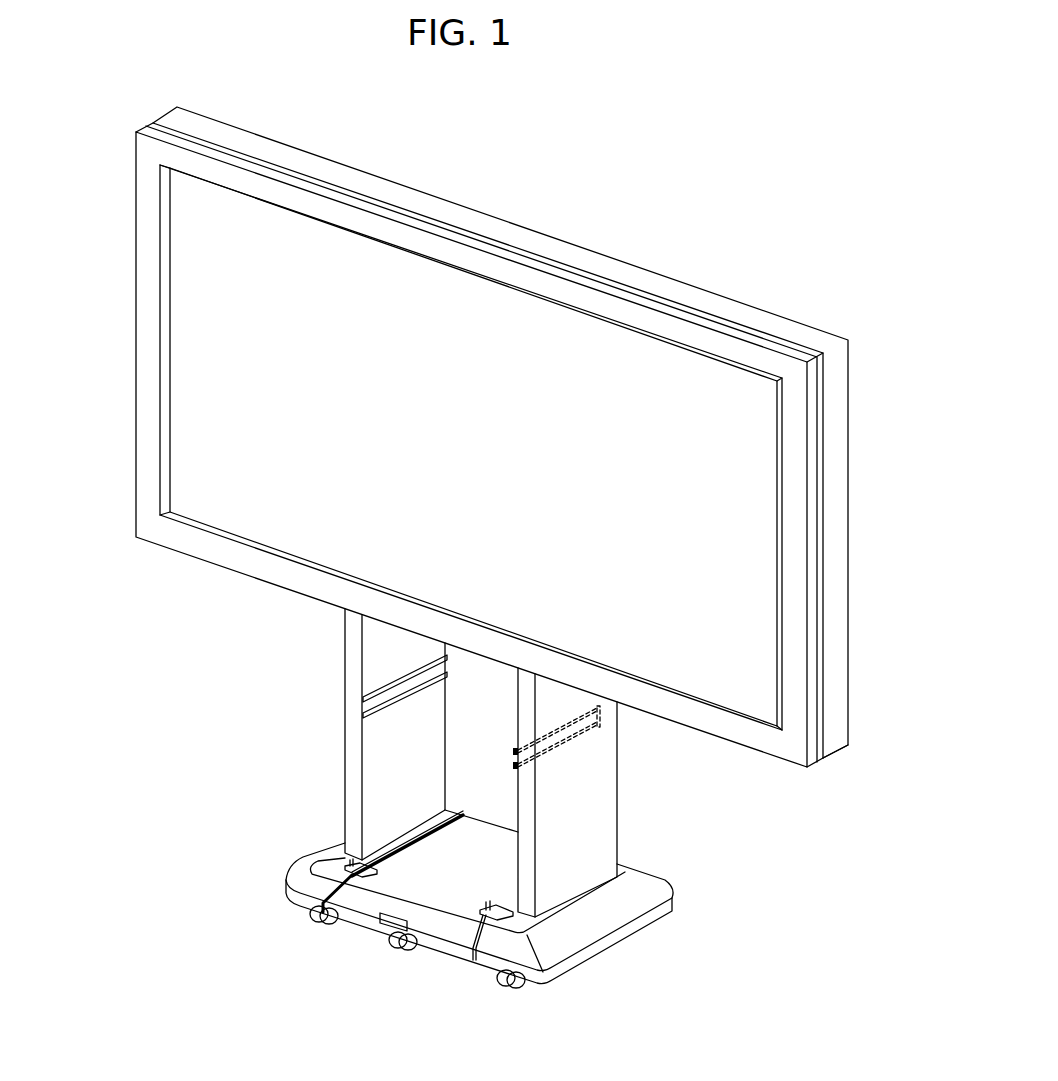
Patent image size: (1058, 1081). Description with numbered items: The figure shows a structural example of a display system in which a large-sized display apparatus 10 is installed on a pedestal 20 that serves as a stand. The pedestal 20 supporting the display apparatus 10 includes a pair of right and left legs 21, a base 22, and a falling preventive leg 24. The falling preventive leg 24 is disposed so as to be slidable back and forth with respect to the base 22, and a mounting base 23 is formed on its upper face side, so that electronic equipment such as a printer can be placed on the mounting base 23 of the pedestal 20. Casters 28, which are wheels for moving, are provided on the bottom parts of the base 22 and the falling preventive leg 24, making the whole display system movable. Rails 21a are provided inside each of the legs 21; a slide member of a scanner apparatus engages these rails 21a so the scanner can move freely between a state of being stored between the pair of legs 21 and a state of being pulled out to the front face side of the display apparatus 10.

The display apparatus 10 is at (130, 411).
The pedestal 20 is at (448, 818).
The legs 21 is at (350, 766).
The rails 21a is at (514, 749).
The base 22 is at (296, 893).
The mounting base 23 is at (450, 903).
The falling preventive leg 24 is at (362, 913).
The casters 28 is at (313, 912).